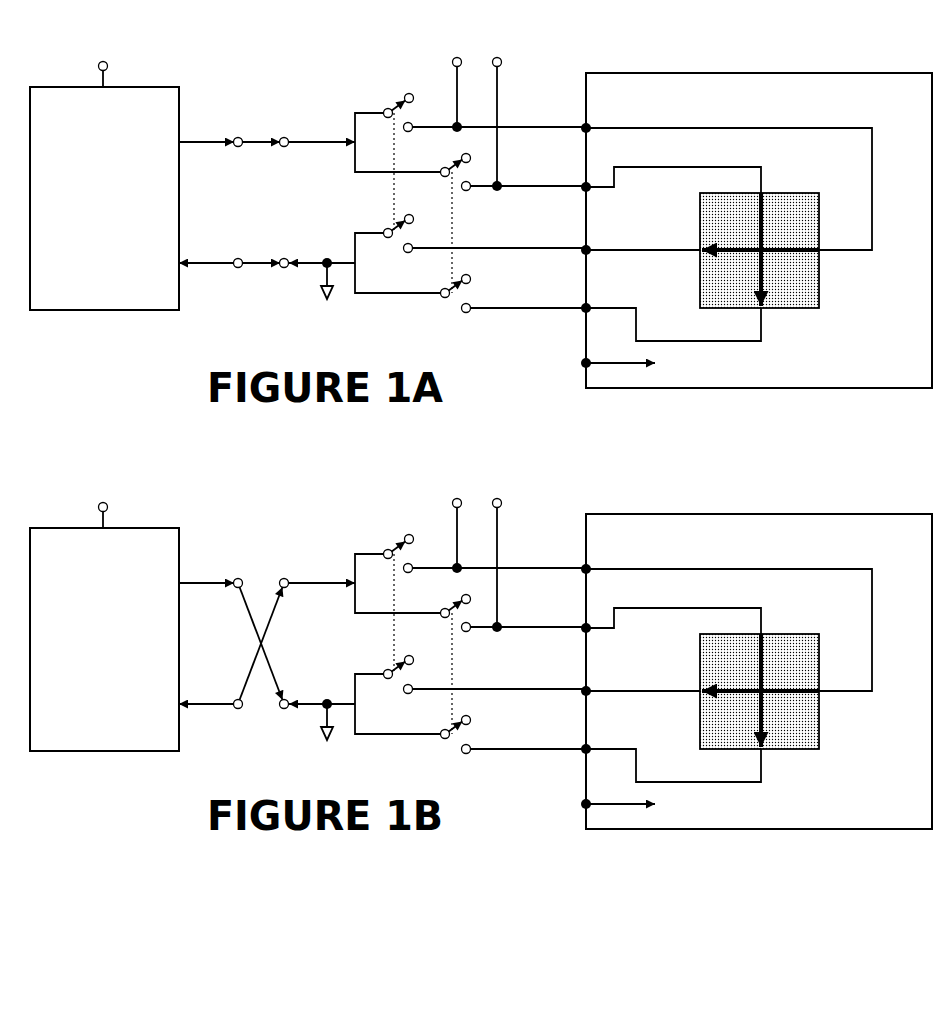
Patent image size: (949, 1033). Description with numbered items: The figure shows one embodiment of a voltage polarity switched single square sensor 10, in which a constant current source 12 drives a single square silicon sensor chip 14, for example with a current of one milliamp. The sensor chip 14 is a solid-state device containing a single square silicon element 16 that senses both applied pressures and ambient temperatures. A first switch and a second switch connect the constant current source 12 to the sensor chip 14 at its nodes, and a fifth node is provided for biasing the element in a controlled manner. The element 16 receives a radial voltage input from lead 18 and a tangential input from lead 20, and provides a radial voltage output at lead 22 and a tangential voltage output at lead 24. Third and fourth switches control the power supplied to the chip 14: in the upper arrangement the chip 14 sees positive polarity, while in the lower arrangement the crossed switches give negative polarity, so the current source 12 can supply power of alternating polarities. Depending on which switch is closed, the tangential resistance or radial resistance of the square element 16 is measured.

In FIG. 1A, the voltage polarity switched single square sensor 10 is at (97, 336).
In FIG. 1B, the voltage polarity switched single square sensor 10 is at (272, 643).
In FIG. 1A, the constant current source 12 is at (92, 264).
In FIG. 1B, the constant current source 12 is at (104, 613).
In FIG. 1A, the single square silicon sensor chip 14 is at (858, 102).
In FIG. 1B, the single square silicon sensor chip 14 is at (756, 671).
In FIG. 1A, the single square silicon element 16 is at (801, 193).
In FIG. 1B, the single square silicon element 16 is at (777, 673).
In FIG. 1A, the lead 18 is at (530, 124).
In FIG. 1B, the lead 18 is at (495, 552).
In FIG. 1A, the lead 20 is at (531, 183).
In FIG. 1B, the lead 20 is at (524, 611).
In FIG. 1A, the lead 22 is at (531, 245).
In FIG. 1B, the lead 22 is at (495, 673).
In FIG. 1A, the lead 24 is at (531, 305).
In FIG. 1B, the lead 24 is at (524, 732).